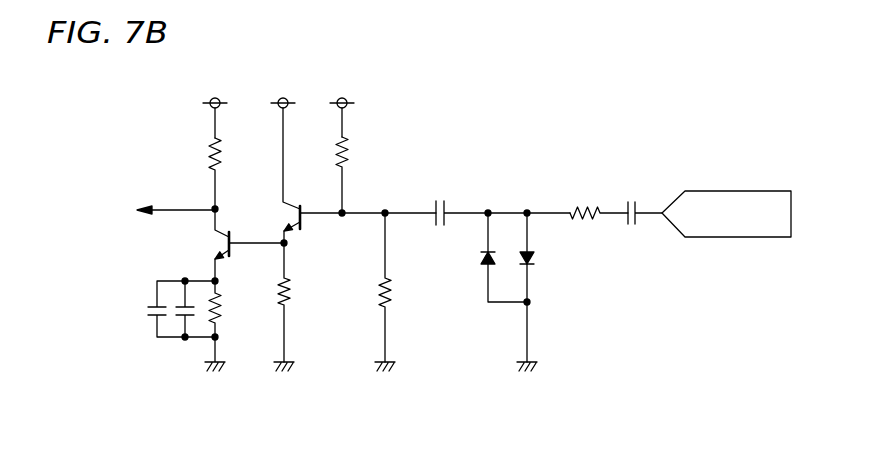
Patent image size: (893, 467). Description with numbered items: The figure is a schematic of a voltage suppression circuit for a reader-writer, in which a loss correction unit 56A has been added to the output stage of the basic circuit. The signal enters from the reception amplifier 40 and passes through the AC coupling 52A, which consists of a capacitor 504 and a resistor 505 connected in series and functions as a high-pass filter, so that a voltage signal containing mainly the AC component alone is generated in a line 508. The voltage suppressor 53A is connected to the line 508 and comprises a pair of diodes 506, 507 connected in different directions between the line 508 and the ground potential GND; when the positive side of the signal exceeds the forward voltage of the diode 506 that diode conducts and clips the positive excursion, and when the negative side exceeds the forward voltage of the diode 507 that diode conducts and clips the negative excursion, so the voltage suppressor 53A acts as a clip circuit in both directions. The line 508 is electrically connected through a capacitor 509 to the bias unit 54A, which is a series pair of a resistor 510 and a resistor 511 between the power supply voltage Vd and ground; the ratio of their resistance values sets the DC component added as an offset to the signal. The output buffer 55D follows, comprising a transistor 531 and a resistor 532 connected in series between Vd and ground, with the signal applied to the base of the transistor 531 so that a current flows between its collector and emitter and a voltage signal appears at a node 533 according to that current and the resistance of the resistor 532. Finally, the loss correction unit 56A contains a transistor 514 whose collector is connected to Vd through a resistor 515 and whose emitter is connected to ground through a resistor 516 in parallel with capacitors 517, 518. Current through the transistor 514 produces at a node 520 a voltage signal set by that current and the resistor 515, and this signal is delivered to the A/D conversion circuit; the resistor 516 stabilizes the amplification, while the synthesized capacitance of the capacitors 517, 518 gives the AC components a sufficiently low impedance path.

The reception amplifier 40 is at (756, 191).
The capacitor 504 is at (631, 205).
The resistor 505 is at (580, 207).
The diode 506 is at (535, 258).
The diode 507 is at (481, 258).
The line 508 is at (507, 211).
The capacitor 509 is at (437, 200).
The resistor 510 is at (348, 150).
The resistor 511 is at (392, 291).
The transistor 514 is at (232, 235).
The resistor 515 is at (208, 154).
The resistor 516 is at (222, 307).
The capacitor 517 is at (183, 303).
The capacitor 518 is at (151, 304).
The node 520 is at (213, 207).
The transistor 531 is at (301, 208).
The resistor 532 is at (291, 289).
The node 533 is at (286, 243).
The AC coupling 52A is at (660, 401).
The voltage suppressor 53A is at (422, 401).
The bias unit 54A is at (410, 401).
The output buffer 55D is at (252, 401).
The loss correction unit 56A is at (143, 401).